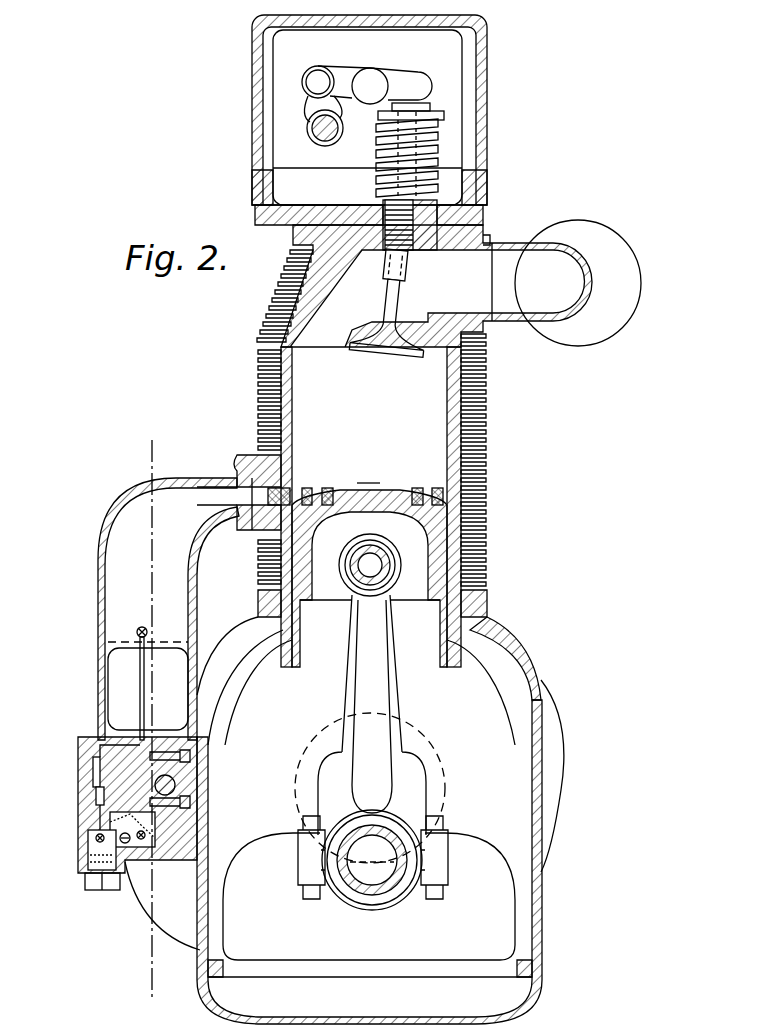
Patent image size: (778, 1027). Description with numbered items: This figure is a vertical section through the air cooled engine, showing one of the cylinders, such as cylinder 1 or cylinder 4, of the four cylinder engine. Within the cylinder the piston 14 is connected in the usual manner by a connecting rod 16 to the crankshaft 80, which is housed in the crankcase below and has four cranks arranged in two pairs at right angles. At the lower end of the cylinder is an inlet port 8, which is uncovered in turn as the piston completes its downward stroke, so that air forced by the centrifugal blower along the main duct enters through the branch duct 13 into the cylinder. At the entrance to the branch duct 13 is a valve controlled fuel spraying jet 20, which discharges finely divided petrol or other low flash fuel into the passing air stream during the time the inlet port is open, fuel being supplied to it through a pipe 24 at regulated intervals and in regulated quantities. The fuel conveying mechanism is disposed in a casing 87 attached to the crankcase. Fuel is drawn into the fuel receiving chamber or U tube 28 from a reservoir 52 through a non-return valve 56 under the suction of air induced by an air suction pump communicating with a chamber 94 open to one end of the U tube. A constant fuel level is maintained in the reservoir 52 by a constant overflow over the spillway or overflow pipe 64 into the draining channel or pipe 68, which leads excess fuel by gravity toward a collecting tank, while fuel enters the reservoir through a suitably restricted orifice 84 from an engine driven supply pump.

The cylinder 1 is at (144, 716).
The cylinder 4 is at (255, 344).
The cylinder inlet port 8 is at (440, 492).
The branch duct 13 is at (135, 527).
The piston 14 is at (445, 606).
The connecting rod 16 is at (400, 690).
The fuel spraying jet 20 is at (137, 632).
The pipe 24 is at (140, 690).
The fuel receiving chamber or U tube 28 is at (98, 795).
The reservoir 52 is at (85, 862).
The non-return valve 56 is at (96, 845).
The spillway or overflow pipe 64 is at (135, 828).
The draining channel or pipe 68 is at (145, 838).
The crankshaft 80 is at (360, 878).
The restricted orifice 84 is at (137, 862).
The casing 87 is at (78, 792).
The chamber 94 is at (93, 754).